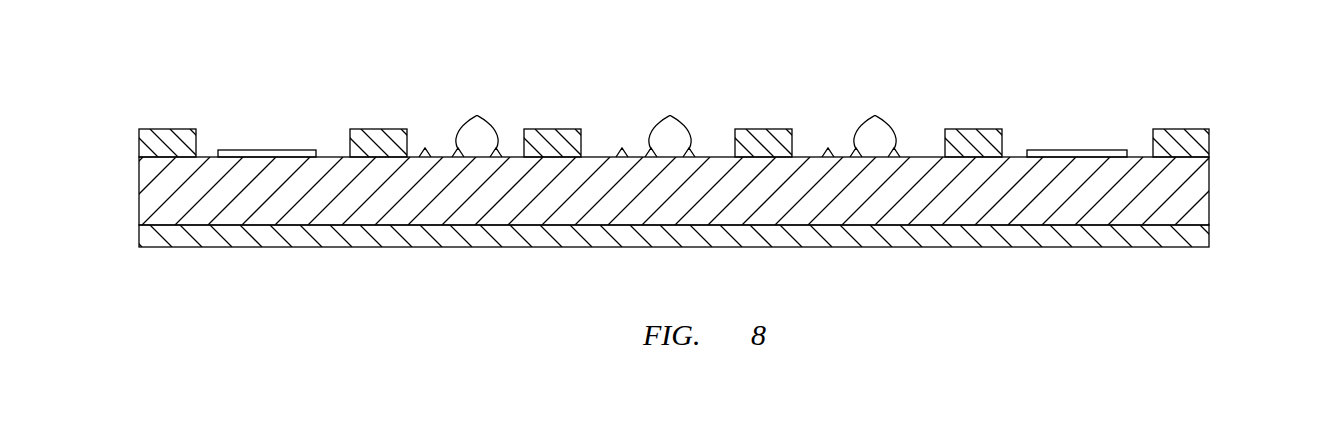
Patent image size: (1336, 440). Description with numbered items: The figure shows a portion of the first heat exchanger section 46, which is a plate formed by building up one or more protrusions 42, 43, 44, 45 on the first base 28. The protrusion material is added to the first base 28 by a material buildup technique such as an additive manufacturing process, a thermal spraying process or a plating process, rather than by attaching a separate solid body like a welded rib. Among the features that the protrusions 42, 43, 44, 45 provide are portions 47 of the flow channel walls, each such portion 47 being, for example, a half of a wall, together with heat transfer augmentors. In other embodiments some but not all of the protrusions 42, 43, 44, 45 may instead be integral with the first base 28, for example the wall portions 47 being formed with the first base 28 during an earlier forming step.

The first base 28 is at (167, 218).
The protrusion 42 is at (691, 101).
The protrusion 43 is at (265, 249).
The protrusion 44 is at (477, 115).
The protrusion 45 is at (265, 150).
The first heat exchanger section 46 is at (1206, 57).
The wall portion 47 is at (168, 129).